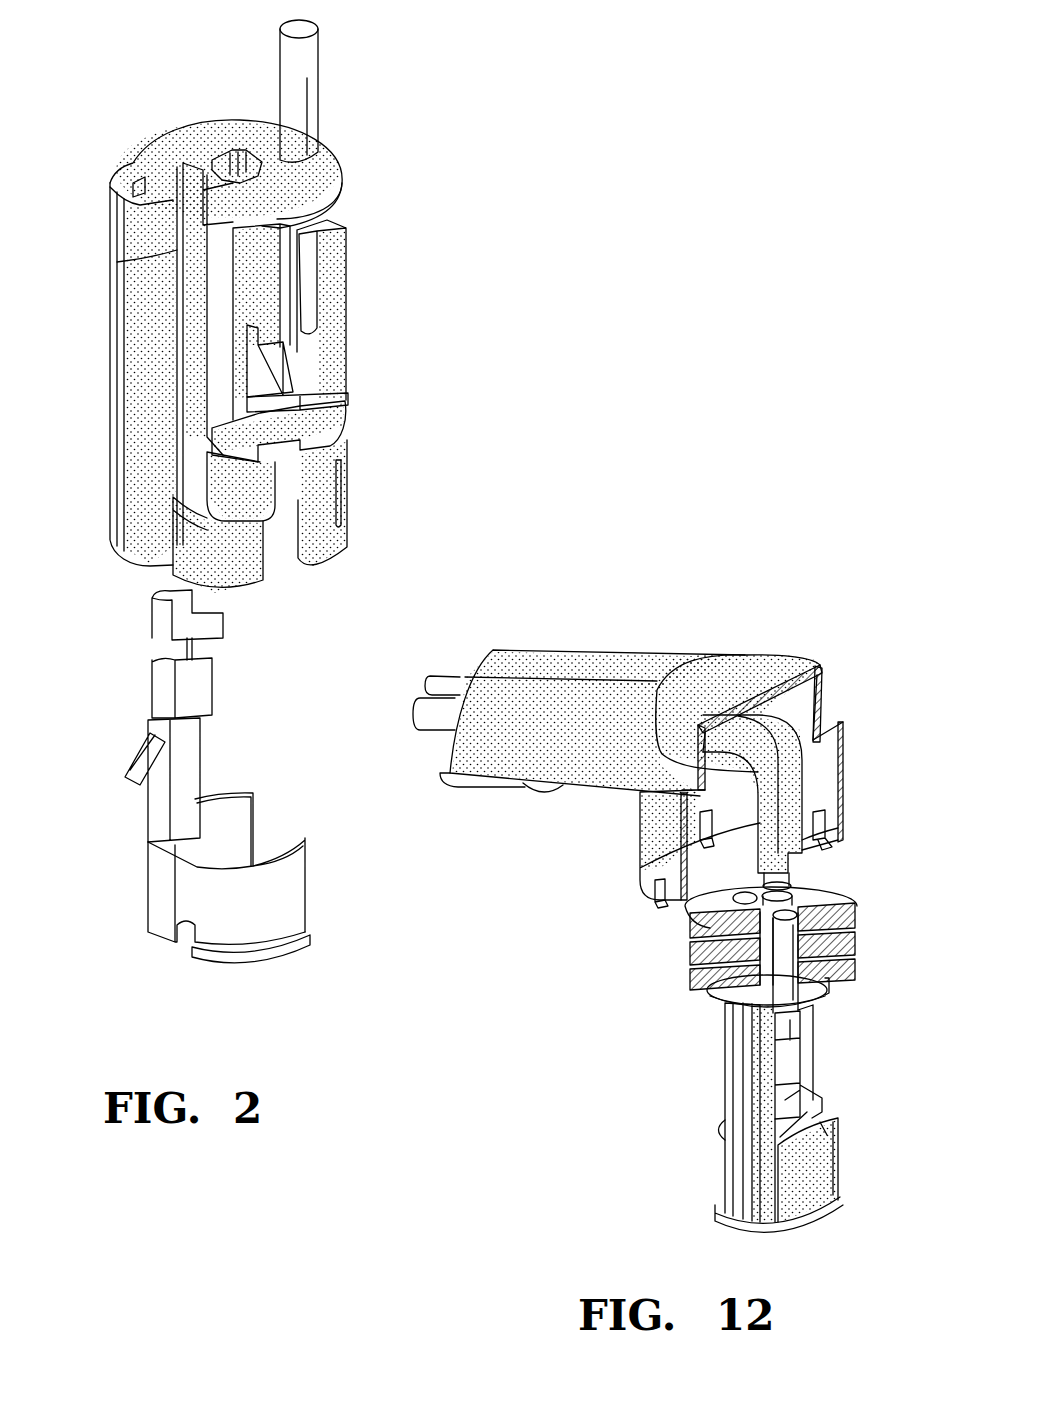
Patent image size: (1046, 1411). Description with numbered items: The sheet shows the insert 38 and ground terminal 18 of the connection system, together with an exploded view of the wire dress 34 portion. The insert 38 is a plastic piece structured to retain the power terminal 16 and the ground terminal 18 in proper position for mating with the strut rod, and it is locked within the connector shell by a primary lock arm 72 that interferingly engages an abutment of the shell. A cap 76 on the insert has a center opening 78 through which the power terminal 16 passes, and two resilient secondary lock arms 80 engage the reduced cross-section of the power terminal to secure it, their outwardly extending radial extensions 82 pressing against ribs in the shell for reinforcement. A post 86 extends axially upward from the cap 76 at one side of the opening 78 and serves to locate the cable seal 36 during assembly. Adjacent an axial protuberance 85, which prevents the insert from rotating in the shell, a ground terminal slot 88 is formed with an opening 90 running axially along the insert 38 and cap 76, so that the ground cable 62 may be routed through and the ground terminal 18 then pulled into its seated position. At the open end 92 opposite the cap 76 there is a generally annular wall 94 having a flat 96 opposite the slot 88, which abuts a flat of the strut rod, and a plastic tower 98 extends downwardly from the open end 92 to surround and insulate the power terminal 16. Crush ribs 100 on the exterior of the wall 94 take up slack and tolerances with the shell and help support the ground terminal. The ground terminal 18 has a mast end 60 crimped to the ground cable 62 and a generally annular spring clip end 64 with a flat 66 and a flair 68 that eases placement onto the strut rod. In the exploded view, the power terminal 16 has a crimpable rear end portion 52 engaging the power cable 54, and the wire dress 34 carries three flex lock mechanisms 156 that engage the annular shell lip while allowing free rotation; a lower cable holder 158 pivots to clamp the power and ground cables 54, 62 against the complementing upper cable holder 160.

In FIG. 12, the power terminal 16 is at (690, 958).
In FIG. 2, the ground terminal 18 is at (238, 710).
In FIG. 12, the ground terminal 18 is at (805, 1090).
In FIG. 12, the wire dress 34 is at (848, 710).
In FIG. 12, the cable seal 36 is at (863, 940).
In FIG. 2, the insert 38 is at (95, 482).
In FIG. 12, the insert 38 is at (714, 1063).
In FIG. 12, the crimpable rear end portion 52 is at (853, 907).
In FIG. 12, the power cable 54 is at (777, 718).
In FIG. 2, the mast end 60 is at (155, 690).
In FIG. 12, the mast end 60 is at (800, 1055).
In FIG. 12, the ground cable 62 is at (793, 782).
In FIG. 2, the spring clip end 64 is at (305, 845).
In FIG. 2, the flat 66 is at (155, 900).
In FIG. 2, the flair 68 is at (243, 958).
In FIG. 2, the primary lock arm 72 is at (342, 272).
In FIG. 2, the cap 76 is at (327, 170).
In FIG. 12, the cap 76 is at (753, 985).
In FIG. 2, the center opening 78 is at (230, 160).
In FIG. 2, the secondary lock arms 80 is at (275, 360).
In FIG. 2, the radial extensions 82 is at (288, 396).
In FIG. 2, the axial protuberance 85 is at (110, 392).
In FIG. 2, the post 86 is at (305, 57).
In FIG. 12, the post 86 is at (763, 930).
In FIG. 2, the ground terminal slot 88 is at (170, 192).
In FIG. 2, the opening 90 is at (177, 252).
In FIG. 2, the open end 92 is at (285, 565).
In FIG. 2, the annular wall 94 is at (332, 542).
In FIG. 2, the flat 96 is at (293, 472).
In FIG. 2, the tower 98 is at (275, 498).
In FIG. 2, the crush ribs 100 is at (345, 520).
In FIG. 12, the flex lock mechanisms 156 is at (655, 901).
In FIG. 12, the lower cable holder 158 is at (497, 787).
In FIG. 12, the upper cable holder 160 is at (540, 655).